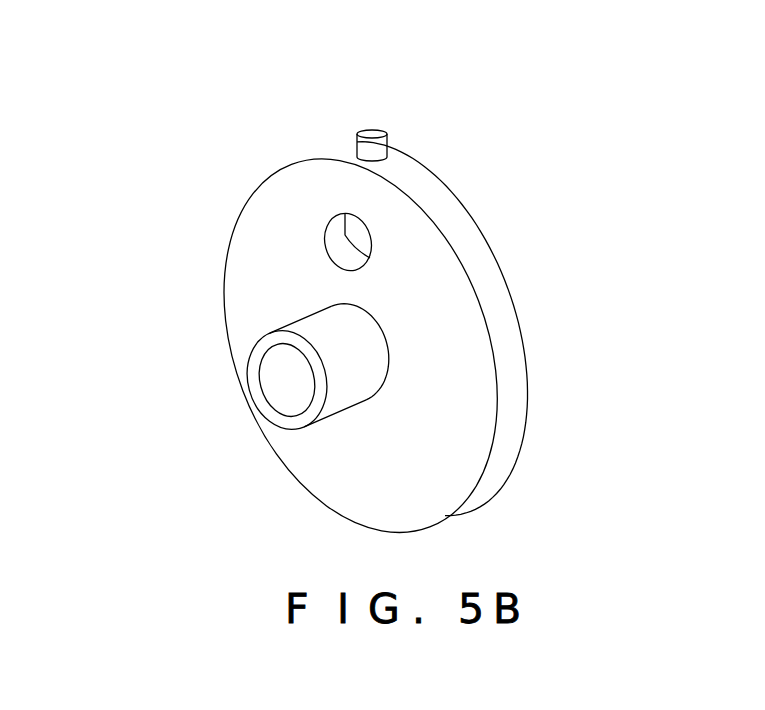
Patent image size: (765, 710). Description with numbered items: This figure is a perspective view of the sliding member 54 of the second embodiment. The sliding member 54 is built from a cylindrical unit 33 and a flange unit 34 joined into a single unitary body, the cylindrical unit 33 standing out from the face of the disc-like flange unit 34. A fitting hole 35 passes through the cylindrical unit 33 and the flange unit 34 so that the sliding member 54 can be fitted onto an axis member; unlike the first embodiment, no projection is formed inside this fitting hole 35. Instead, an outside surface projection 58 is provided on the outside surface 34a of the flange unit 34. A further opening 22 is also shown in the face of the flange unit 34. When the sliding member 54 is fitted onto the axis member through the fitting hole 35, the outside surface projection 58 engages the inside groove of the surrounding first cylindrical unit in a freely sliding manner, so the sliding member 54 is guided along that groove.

The sliding member 54 is at (489, 95).
The outside surface projection 58 is at (376, 129).
The hole 22 is at (343, 235).
The cylindrical unit 33 is at (328, 332).
The fitting hole 35 is at (277, 383).
The flange unit 34 is at (460, 352).
The outside surface 34a is at (440, 207).